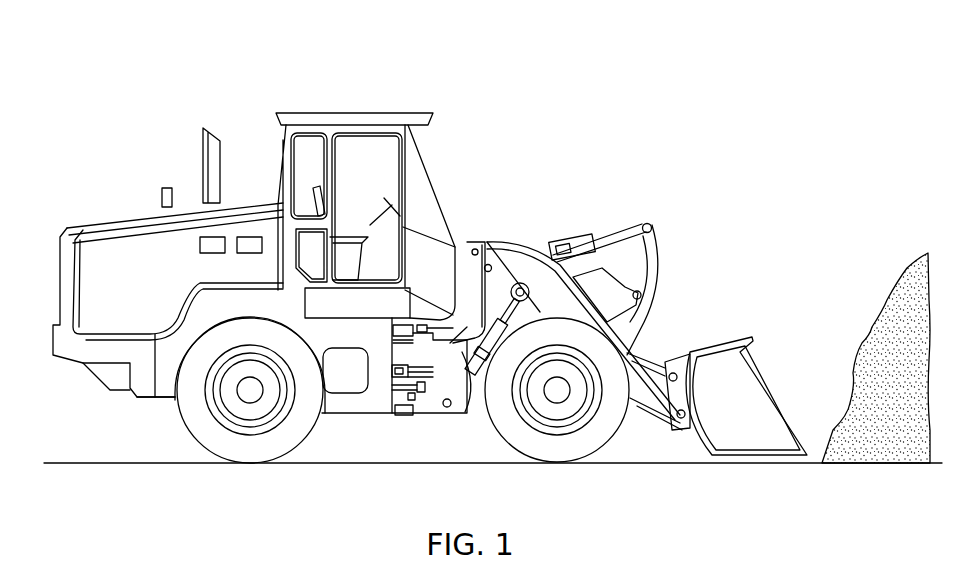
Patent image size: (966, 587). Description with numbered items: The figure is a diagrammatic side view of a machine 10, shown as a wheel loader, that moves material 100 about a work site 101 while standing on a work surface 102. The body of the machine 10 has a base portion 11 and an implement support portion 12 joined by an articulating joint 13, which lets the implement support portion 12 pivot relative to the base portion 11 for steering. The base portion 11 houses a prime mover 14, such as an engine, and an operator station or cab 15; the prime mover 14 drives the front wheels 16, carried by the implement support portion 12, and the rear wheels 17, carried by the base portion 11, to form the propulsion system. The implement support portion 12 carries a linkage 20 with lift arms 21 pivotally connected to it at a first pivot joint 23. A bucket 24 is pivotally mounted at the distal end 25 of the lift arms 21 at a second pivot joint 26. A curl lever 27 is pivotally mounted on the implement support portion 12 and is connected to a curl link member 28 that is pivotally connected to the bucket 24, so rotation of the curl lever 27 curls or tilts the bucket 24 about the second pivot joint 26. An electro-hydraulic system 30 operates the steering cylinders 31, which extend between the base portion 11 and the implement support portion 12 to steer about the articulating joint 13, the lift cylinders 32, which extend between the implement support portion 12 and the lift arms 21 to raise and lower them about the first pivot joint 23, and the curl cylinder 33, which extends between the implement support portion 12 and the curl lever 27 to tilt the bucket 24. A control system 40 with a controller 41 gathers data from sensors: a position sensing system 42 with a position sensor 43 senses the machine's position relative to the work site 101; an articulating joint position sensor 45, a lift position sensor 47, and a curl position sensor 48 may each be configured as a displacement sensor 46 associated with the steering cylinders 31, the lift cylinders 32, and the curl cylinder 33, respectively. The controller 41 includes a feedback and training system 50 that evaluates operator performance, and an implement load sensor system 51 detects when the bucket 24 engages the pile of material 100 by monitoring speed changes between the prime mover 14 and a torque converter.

The machine 10 is at (498, 120).
The base portion 11 is at (143, 385).
The implement support portion 12 is at (453, 410).
The articulating joint 13 is at (418, 430).
The prime mover 14 is at (122, 200).
The operator station or cab 15 is at (358, 112).
The front wheels 16 is at (560, 447).
The rear wheels 17 is at (252, 450).
The linkage 20 is at (530, 185).
The lift arms 21 is at (515, 262).
The first pivot joint 23 is at (479, 249).
The bucket 24 is at (722, 350).
The distal end 25 is at (653, 403).
The second pivot joint 26 is at (682, 433).
The curl lever 27 is at (655, 242).
The curl link member 28 is at (650, 370).
The electro-hydraulic system 30 is at (600, 185).
The steering cylinders 31 is at (407, 357).
The lift cylinders 32 is at (457, 407).
The curl cylinder 33 is at (583, 242).
The control system 40 is at (535, 128).
The controller 41 is at (250, 237).
The position sensing system 42 is at (578, 128).
The position sensor 43 is at (207, 237).
The articulating joint position sensor 45 is at (388, 432).
The displacement sensor 46 is at (507, 352).
The lift position sensor 47 is at (497, 218).
The curl position sensor 48 is at (708, 300).
The feedback and training system 50 is at (678, 148).
The implement load sensor system 51 is at (716, 155).
The material 100 is at (897, 317).
The work site 101 is at (840, 72).
The work surface 102 is at (126, 461).